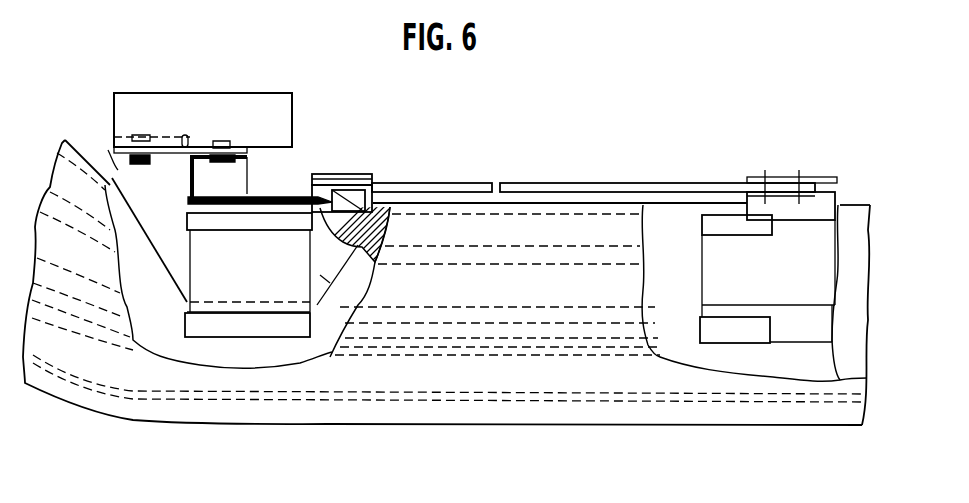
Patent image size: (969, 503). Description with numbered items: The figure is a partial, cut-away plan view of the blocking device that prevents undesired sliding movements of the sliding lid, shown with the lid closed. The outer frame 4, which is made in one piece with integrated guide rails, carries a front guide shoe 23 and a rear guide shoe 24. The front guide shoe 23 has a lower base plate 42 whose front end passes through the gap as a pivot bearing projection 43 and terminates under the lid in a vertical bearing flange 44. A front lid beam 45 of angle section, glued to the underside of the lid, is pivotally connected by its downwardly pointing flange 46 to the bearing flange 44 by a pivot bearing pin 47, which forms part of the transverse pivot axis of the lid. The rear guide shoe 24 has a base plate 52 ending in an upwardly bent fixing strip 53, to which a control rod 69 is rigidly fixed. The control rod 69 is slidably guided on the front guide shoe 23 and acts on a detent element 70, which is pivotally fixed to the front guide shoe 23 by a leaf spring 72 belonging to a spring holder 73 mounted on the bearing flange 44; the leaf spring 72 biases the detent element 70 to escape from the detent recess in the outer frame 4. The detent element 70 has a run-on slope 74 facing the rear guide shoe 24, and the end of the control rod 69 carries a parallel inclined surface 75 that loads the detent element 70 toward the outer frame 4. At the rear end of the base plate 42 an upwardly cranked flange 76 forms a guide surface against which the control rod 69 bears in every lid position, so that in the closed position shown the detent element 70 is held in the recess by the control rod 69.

The outer frame 4 is at (443, 427).
The front guide shoe 23 is at (228, 342).
The rear guide shoe 24 is at (806, 345).
The base plate 42 is at (325, 282).
The pivot bearing projection 43 is at (160, 250).
The bearing flange 44 is at (199, 150).
The front lid beam 45 is at (140, 103).
The downwardly pointing flange 46 is at (165, 135).
The pivot bearing pin 47 is at (108, 150).
The base plate 52 is at (827, 198).
The fixing strip 53 is at (826, 181).
The control rod 69 is at (607, 185).
The detent element 70 is at (350, 173).
The leaf spring 72 is at (272, 197).
The spring holder 73 is at (240, 170).
The run-on slope 74 is at (378, 183).
The inclined surface 75 is at (305, 193).
The upwardly cranked flange 76 is at (365, 177).